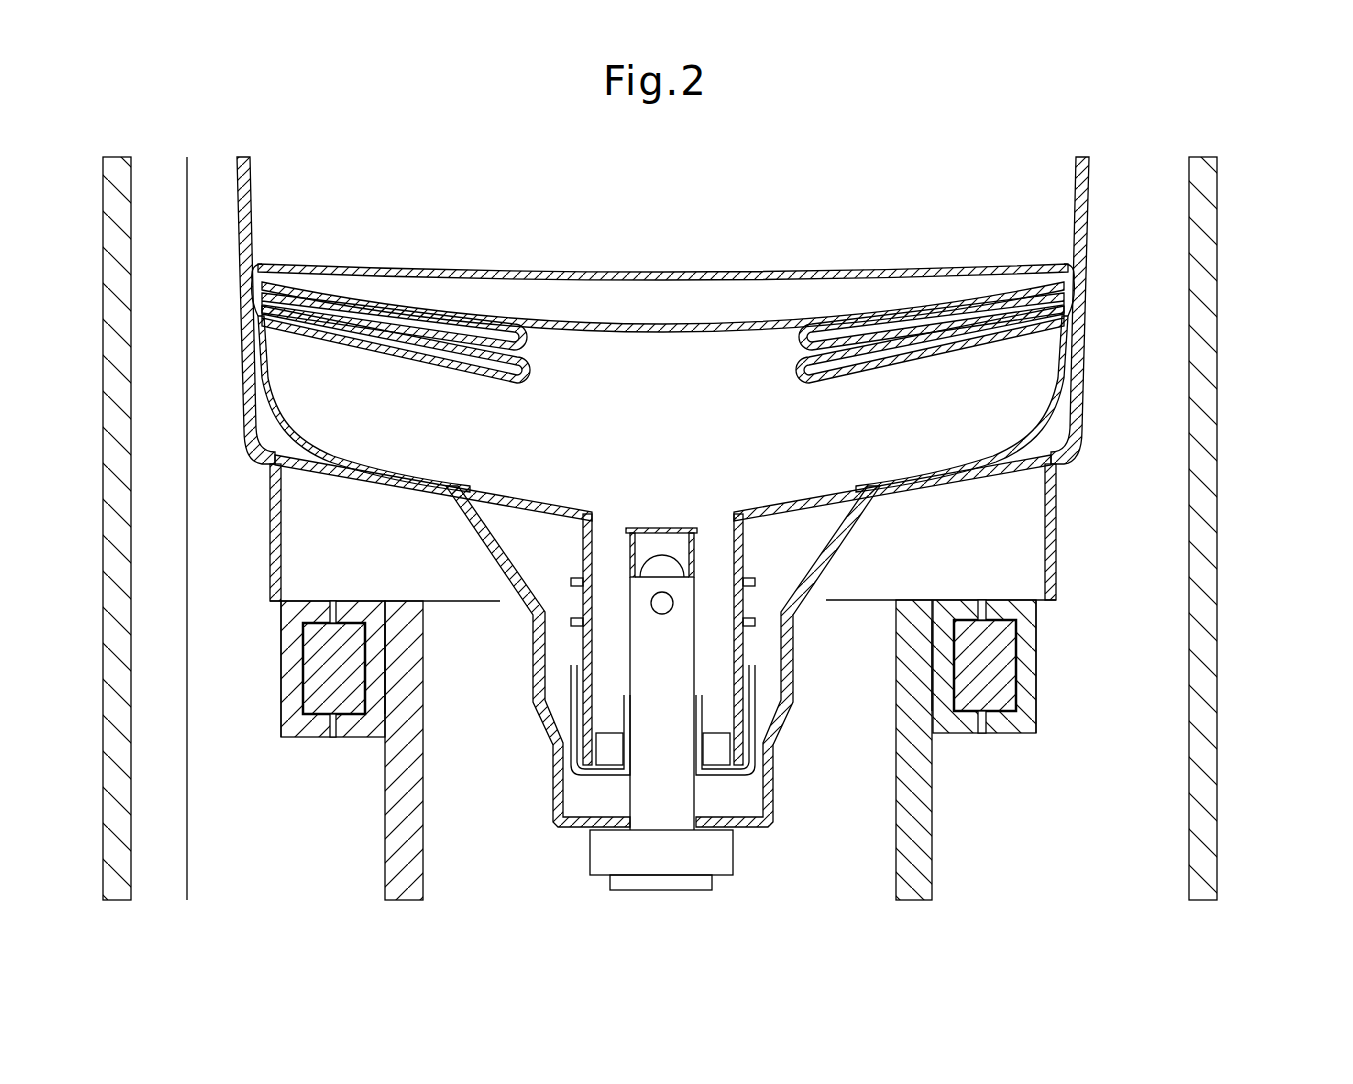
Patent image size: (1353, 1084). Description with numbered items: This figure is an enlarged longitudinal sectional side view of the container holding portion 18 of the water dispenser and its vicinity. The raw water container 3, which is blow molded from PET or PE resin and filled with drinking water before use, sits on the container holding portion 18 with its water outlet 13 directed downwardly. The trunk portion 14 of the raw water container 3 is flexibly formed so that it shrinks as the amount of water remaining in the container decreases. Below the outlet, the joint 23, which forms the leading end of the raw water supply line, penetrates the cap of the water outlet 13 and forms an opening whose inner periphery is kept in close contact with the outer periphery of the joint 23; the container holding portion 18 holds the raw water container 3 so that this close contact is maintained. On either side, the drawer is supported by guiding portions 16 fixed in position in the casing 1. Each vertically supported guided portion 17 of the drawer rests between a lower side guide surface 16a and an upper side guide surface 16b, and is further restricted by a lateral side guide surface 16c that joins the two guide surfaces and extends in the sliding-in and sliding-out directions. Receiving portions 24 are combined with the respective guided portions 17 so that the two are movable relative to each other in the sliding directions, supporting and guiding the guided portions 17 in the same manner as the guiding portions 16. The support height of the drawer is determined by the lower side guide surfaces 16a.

The casing 1 is at (1218, 432).
The raw water container 3 is at (300, 263).
The water outlet 13 is at (745, 745).
The trunk portion 14 is at (414, 319).
The guiding portion 16 is at (367, 690).
The lower side guide surface 16a is at (362, 715).
The upper side guide surface 16b is at (347, 626).
The lateral side guide surface 16c is at (382, 658).
The guided portion 17 is at (328, 680).
The container holding portion 18 is at (1090, 233).
The joint 23 is at (678, 632).
The receiving portion 24 is at (292, 652).